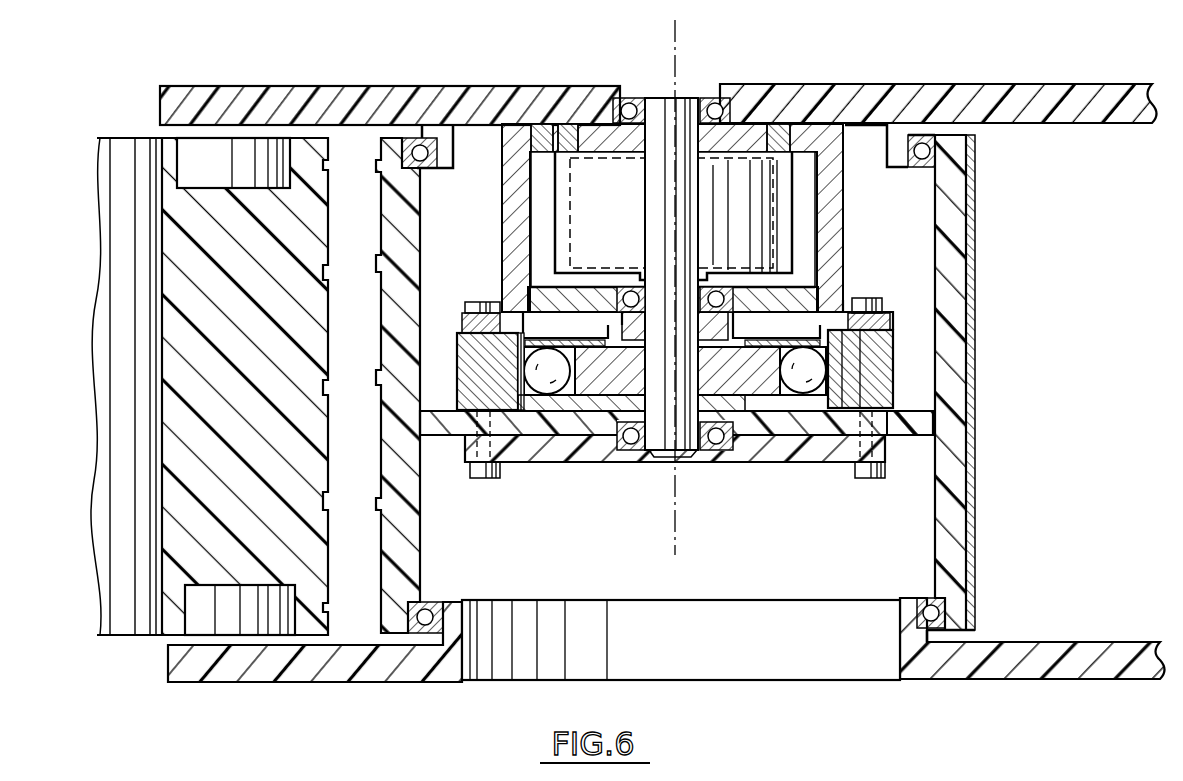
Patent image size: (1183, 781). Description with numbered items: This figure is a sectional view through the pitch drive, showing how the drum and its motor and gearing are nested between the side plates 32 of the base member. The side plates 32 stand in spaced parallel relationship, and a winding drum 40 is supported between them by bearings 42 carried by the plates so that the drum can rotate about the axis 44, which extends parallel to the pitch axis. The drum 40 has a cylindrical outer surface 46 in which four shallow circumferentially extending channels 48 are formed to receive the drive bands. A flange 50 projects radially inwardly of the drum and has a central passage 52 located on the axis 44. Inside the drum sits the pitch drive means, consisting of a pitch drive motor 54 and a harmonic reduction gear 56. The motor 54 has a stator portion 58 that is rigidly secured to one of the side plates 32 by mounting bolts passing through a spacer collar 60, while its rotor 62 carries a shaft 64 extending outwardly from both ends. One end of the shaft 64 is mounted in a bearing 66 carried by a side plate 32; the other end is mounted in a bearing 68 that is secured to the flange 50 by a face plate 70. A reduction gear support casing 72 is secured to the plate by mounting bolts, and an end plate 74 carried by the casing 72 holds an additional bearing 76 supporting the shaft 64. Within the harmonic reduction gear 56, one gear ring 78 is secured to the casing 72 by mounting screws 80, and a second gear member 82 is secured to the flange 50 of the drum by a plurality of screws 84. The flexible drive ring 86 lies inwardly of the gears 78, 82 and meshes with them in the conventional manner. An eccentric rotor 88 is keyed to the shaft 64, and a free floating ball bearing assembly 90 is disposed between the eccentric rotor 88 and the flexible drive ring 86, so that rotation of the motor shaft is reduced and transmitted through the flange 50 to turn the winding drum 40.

The side plates 32 is at (432, 87).
The winding drum 40 is at (420, 508).
The bearings 42 is at (434, 170).
The axis 44 is at (679, 520).
The cylindrical outer surface 46 is at (977, 380).
The channels 48 is at (378, 252).
The flange 50 is at (441, 437).
The central passage 52 is at (590, 458).
The pitch drive motor 54 is at (803, 228).
The harmonic reduction gear 56 is at (906, 358).
The stator portion 58 is at (560, 126).
The spacer collar 60 is at (786, 125).
The rotor 62 is at (624, 195).
The shaft 64 is at (684, 100).
The bearing 66 is at (742, 105).
The bearing 68 is at (740, 458).
The face plate 70 is at (795, 460).
The reduction gear support casing 72 is at (508, 236).
The end plate 74 is at (535, 300).
The bearing 76 is at (622, 316).
The gear ring 78 is at (462, 342).
The mounting screws 80 is at (478, 305).
The second gear member 82 is at (462, 376).
The screws 84 is at (484, 478).
The flexible drive ring 86 is at (584, 354).
The eccentric rotor 88 is at (738, 366).
The free floating ball bearing assembly 90 is at (850, 300).